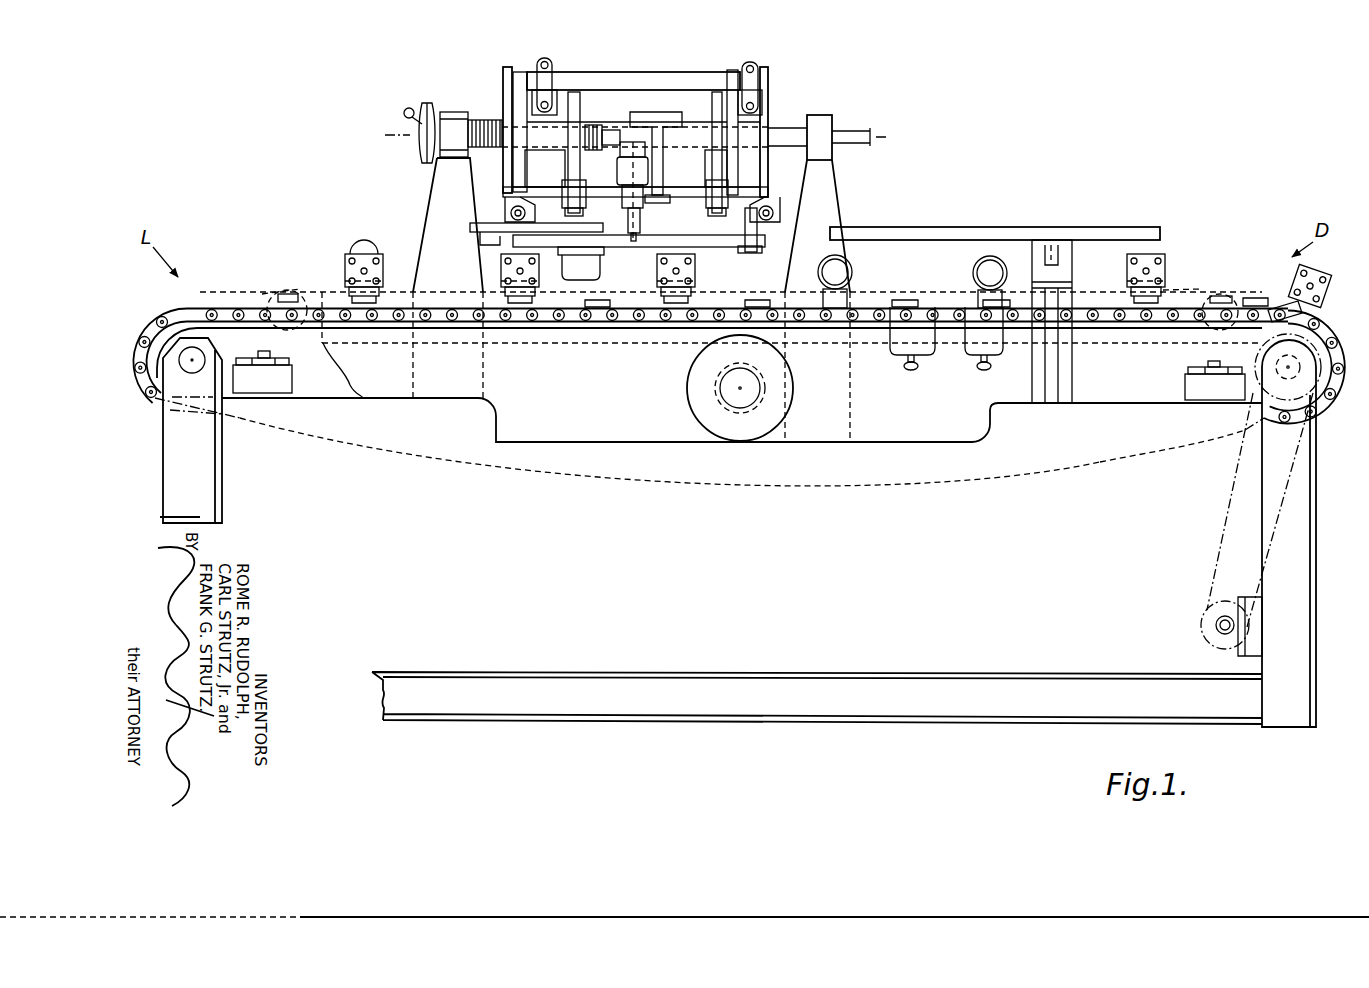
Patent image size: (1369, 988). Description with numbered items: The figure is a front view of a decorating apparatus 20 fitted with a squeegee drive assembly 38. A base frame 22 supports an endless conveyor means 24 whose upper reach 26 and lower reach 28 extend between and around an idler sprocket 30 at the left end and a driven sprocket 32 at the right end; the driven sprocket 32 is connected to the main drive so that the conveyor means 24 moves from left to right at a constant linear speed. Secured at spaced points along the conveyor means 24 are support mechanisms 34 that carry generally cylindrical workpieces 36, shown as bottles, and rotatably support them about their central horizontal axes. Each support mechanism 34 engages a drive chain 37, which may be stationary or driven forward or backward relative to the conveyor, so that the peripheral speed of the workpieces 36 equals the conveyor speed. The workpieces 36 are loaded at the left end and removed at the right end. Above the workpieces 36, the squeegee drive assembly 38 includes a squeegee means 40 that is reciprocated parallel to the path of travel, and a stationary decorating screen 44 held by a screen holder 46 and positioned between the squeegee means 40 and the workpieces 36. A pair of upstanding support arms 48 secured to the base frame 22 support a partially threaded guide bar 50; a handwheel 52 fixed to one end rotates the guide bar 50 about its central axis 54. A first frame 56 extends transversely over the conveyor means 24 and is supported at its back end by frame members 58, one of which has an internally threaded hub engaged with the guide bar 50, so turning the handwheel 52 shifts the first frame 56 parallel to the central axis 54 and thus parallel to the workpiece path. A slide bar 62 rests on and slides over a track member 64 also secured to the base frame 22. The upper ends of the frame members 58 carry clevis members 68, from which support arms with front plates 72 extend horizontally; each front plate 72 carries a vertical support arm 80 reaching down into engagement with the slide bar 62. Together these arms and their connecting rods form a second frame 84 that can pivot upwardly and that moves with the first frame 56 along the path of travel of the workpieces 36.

The decorating apparatus 20 is at (1172, 219).
The base frame 22 is at (1305, 594).
The endless conveyor means 24 is at (990, 498).
The upper reach 26 is at (1250, 298).
The lower reach 28 is at (1168, 452).
The idler sprocket 30 is at (238, 322).
The driven sprocket 32 is at (1240, 366).
The support mechanisms 34 is at (348, 253).
The workpieces 36 is at (852, 268).
The drive chain 37 is at (1194, 296).
The squeegee drive assembly 38 is at (738, 48).
The squeegee means 40 is at (648, 174).
The stationary decorating screen 44 is at (657, 248).
The screen holder 46 is at (717, 238).
The upstanding support arms 48 is at (435, 211).
The guide bar 50 is at (793, 125).
The handwheel 52 is at (431, 103).
The central axis 54 is at (408, 117).
The first frame 56 is at (487, 100).
The frame members 58 is at (530, 173).
The slide bar 62 is at (753, 223).
The track member 64 is at (873, 227).
The clevis members 68 is at (554, 66).
The front plates 72 is at (548, 77).
The vertical support arms 80 is at (578, 112).
The second frame 84 is at (740, 136).